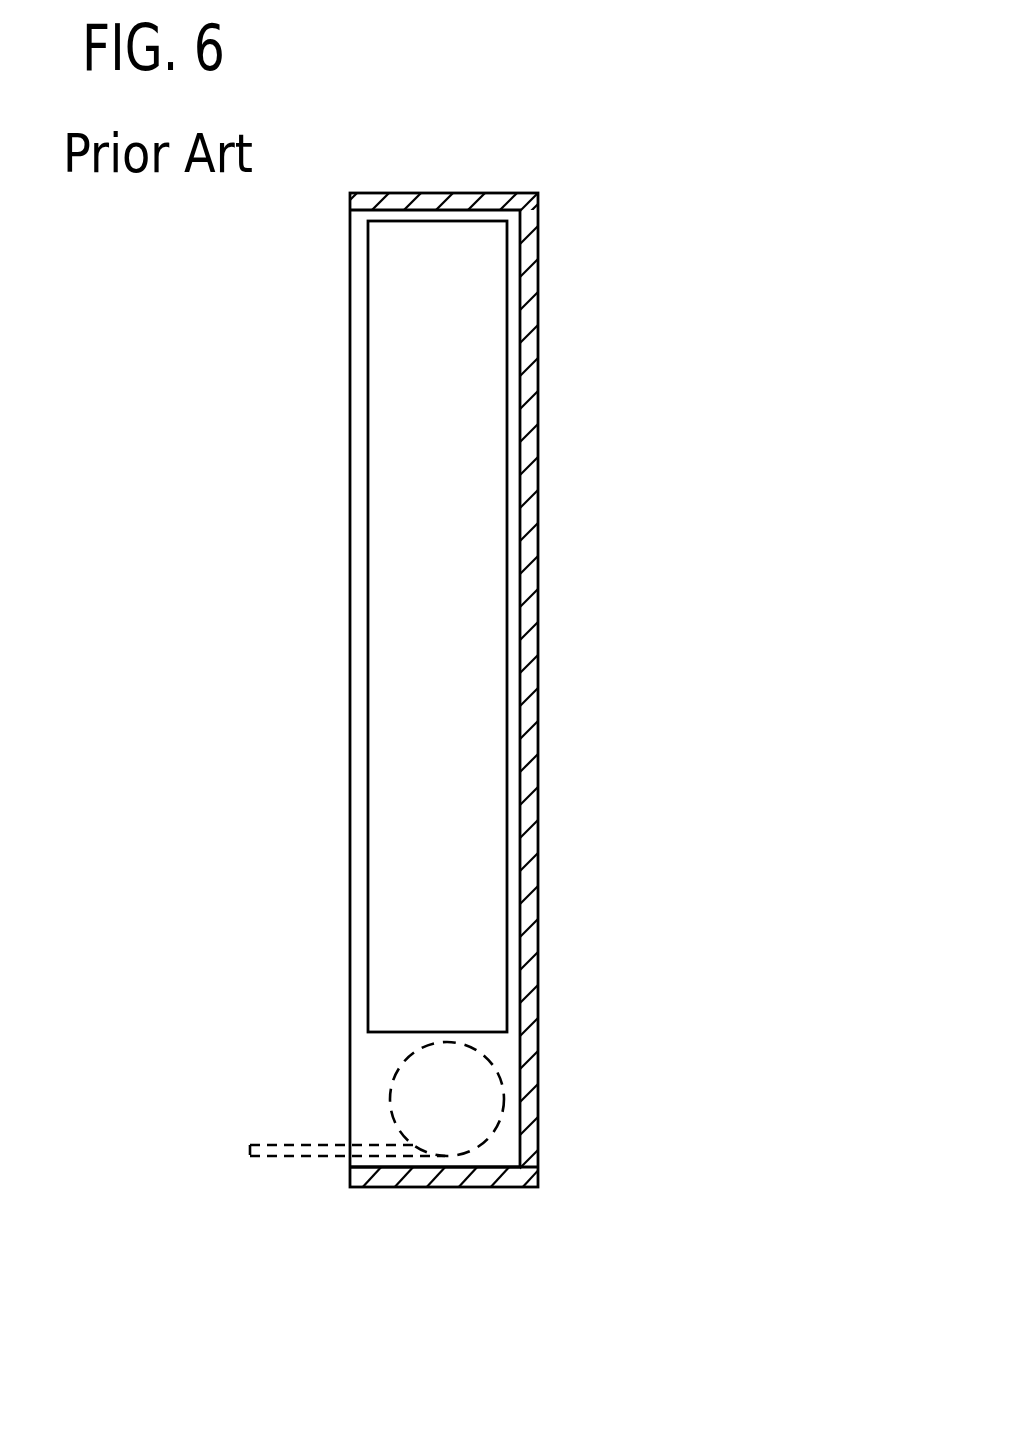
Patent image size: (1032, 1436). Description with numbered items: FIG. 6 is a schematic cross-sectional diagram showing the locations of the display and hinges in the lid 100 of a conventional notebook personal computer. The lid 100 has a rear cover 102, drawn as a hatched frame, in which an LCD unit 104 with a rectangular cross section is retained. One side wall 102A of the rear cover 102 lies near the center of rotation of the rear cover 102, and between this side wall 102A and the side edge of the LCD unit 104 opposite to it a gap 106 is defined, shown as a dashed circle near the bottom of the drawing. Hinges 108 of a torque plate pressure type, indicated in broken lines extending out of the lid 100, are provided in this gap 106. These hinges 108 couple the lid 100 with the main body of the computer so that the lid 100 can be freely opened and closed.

The lid 100 is at (708, 166).
The rear cover 102 is at (426, 193).
The side wall 102A is at (403, 1187).
The LCD unit 104 is at (368, 552).
The gap 106 is at (503, 1051).
The hinges 108 is at (390, 1090).